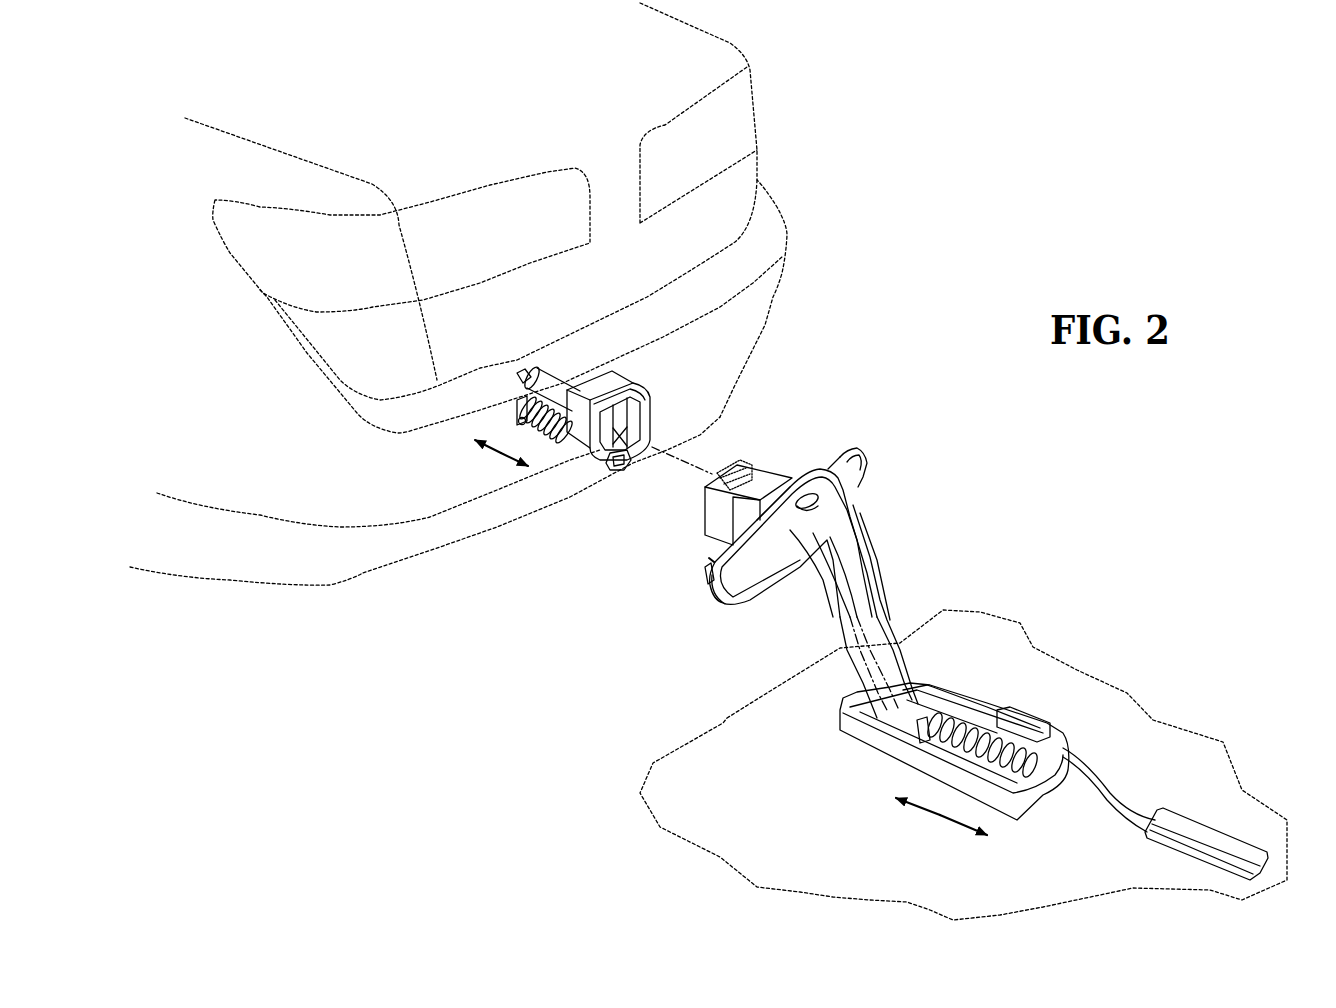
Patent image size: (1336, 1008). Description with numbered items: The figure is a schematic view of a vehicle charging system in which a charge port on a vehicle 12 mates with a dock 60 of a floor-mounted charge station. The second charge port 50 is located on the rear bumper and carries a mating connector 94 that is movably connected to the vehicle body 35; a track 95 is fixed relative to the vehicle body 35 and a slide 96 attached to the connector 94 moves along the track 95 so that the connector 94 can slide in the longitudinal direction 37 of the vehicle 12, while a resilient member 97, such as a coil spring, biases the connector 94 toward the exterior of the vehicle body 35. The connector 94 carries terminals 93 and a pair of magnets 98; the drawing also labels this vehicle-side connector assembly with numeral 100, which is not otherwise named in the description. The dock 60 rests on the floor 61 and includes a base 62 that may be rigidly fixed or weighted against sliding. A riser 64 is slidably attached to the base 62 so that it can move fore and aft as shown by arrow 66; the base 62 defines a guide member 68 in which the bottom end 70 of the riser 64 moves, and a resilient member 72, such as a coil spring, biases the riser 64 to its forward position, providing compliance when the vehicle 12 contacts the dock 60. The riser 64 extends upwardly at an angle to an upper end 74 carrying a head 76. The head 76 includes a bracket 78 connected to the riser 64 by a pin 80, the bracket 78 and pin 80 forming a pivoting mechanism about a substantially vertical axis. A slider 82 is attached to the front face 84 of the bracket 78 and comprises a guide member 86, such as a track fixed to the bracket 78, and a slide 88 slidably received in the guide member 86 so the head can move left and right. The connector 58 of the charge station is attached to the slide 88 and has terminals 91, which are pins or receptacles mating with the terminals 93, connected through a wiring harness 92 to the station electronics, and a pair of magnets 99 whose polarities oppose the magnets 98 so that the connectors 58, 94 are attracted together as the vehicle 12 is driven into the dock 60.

The vehicle 12 is at (281, 178).
The vehicle body 35 is at (417, 482).
The longitudinal direction 37 is at (497, 462).
The second charge port 50 is at (579, 411).
The connector 58 is at (757, 462).
The dock 60 is at (963, 732).
The floor 61 is at (1147, 748).
The base 62 is at (906, 757).
The riser 64 is at (847, 636).
The arrow 66 is at (943, 818).
The guide member 68 is at (928, 740).
The bottom end 70 is at (900, 710).
The resilient member 72 is at (975, 730).
The upper end 74 is at (744, 521).
The head 76 is at (784, 537).
The bracket 78 is at (858, 458).
The pin 80 is at (858, 490).
The slider 82 is at (704, 575).
The front face 84 is at (728, 594).
The guide member 86 is at (823, 462).
The slide 88 is at (710, 557).
The terminals 91 is at (704, 462).
The wiring harness 92 is at (868, 515).
The terminals 93 is at (624, 405).
The mating connector 94 is at (615, 392).
The track 95 is at (548, 440).
The slide 96 is at (628, 458).
The resilient member 97 is at (515, 415).
The magnets 98 is at (650, 415).
The magnets 99 is at (703, 520).
The connector 100 is at (579, 411).